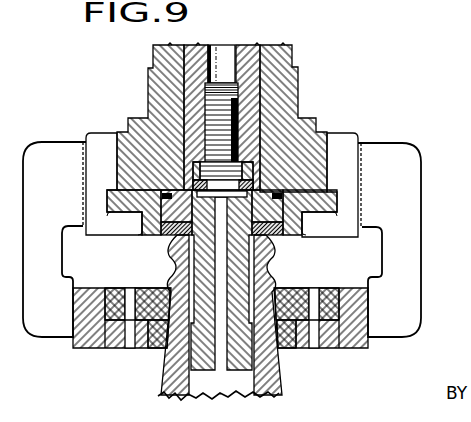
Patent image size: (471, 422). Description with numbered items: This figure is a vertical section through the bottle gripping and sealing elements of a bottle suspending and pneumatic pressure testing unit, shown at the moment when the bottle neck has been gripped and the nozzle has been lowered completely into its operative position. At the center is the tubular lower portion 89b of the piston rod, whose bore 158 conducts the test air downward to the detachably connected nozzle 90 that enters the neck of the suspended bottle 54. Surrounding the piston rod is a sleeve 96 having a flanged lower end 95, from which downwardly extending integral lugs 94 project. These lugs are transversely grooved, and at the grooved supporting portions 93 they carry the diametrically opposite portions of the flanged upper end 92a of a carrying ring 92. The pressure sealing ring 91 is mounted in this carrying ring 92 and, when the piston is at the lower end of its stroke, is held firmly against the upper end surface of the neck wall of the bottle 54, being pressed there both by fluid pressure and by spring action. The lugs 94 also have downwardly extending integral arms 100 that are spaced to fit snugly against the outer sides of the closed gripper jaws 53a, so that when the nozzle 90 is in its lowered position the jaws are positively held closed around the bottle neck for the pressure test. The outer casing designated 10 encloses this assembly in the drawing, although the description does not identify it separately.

The bore 158 is at (157, 48).
The tubular lower portion 89b is at (247, 45).
The sleeve 96 is at (298, 77).
The lugs 94 is at (97, 137).
The flanged lower end 95 is at (300, 145).
The pressure sealing ring 91 is at (286, 194).
The flanged upper end 92a is at (337, 200).
The supporting portions 93 is at (107, 215).
The carrying ring 92 is at (293, 222).
The gripper jaws 53a is at (160, 265).
The casing 10 is at (408, 248).
The arms 100 is at (57, 322).
The nozzle 90 is at (200, 356).
The bottle 54 is at (265, 373).